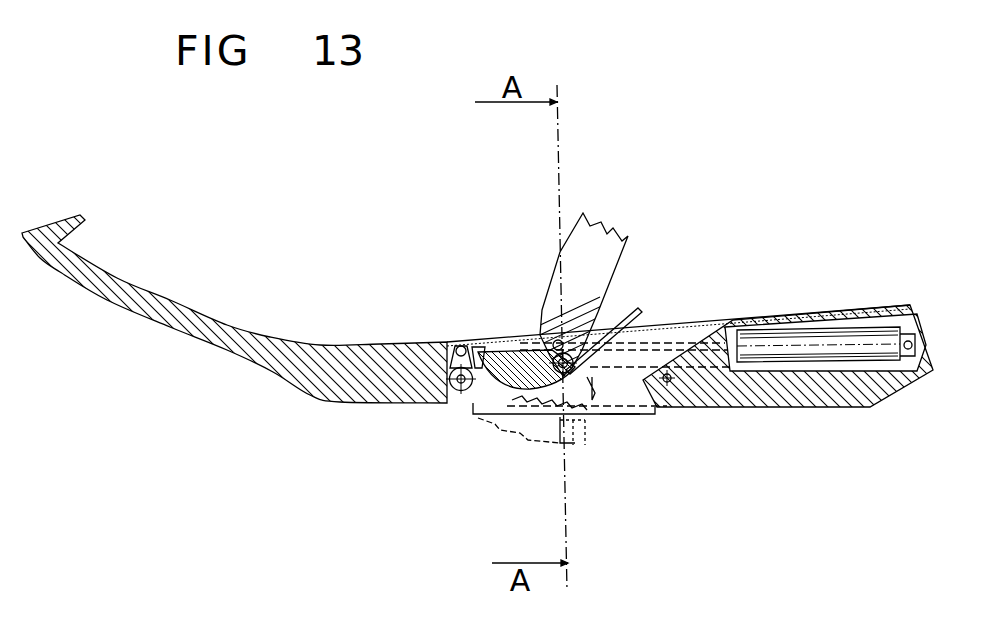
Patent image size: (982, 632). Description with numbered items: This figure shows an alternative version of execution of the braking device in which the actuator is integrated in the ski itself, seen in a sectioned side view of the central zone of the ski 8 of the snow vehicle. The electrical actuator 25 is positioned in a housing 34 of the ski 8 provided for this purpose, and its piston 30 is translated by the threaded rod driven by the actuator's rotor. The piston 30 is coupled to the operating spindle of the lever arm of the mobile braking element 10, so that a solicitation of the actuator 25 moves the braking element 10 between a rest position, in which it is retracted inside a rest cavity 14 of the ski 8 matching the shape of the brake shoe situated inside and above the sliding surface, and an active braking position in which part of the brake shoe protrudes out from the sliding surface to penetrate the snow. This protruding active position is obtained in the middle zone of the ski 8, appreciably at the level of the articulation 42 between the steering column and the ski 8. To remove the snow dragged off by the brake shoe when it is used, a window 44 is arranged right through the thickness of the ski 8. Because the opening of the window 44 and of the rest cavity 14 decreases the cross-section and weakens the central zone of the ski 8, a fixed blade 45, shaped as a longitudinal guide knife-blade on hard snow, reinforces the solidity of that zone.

The ski 8 is at (292, 468).
The mobile braking element 10 is at (512, 449).
The rest cavity 14 is at (638, 388).
The electrical actuator 25 is at (807, 337).
The piston 30 is at (676, 344).
The housing 34 is at (868, 322).
The articulation 42 is at (553, 290).
The window 44 is at (649, 334).
The fixed blade 45 is at (616, 415).